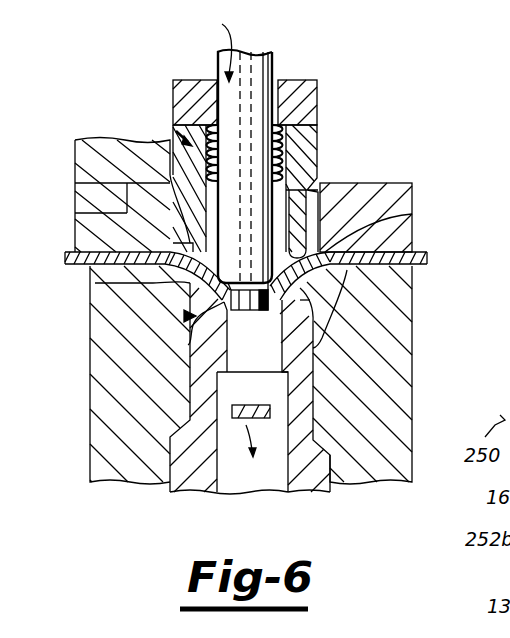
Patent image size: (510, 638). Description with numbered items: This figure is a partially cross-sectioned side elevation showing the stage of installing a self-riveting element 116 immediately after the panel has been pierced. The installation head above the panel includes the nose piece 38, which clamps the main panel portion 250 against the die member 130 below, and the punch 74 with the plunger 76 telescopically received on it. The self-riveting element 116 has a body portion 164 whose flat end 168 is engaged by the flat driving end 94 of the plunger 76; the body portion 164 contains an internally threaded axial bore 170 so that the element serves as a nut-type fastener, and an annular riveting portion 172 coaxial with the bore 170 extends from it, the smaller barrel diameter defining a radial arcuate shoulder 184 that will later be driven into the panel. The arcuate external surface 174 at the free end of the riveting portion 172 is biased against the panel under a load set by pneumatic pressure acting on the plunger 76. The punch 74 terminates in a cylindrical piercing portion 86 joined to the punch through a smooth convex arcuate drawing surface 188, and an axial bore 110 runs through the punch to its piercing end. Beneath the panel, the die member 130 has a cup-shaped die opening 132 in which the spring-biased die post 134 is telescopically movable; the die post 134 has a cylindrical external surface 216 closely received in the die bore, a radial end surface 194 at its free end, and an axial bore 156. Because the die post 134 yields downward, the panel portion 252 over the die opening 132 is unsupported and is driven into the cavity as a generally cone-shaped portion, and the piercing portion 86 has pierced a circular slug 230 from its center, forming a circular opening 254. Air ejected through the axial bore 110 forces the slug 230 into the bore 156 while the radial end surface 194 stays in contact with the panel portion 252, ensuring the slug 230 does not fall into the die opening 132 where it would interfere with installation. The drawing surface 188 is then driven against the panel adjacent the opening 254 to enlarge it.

The nose piece 38 is at (405, 206).
The punch 74 is at (213, 47).
The plunger 76 is at (305, 86).
The piercing portion 86 is at (262, 312).
The free driving end 94 is at (305, 130).
The axial bore 110 is at (248, 52).
The self-riveting element 116 is at (172, 128).
The die member 130 is at (120, 390).
The die opening 132 is at (185, 315).
The die post 134 is at (300, 387).
The axial bore 156 is at (262, 492).
The body portion 164 is at (318, 147).
The flat end 168 is at (196, 92).
The axial bore 170 is at (316, 158).
The annular riveting portion 172 is at (75, 228).
The arcuate external surface 174 is at (95, 283).
The radial arcuate shoulder 184 is at (75, 163).
The arcuate drawing surface 188 is at (385, 229).
The radial end surface 194 is at (325, 310).
The cylindrical external surface 216 is at (313, 370).
The slug 230 is at (236, 420).
The main panel portion 250 is at (428, 257).
The panel portion 252 is at (186, 315).
The circular opening 254 is at (230, 318).